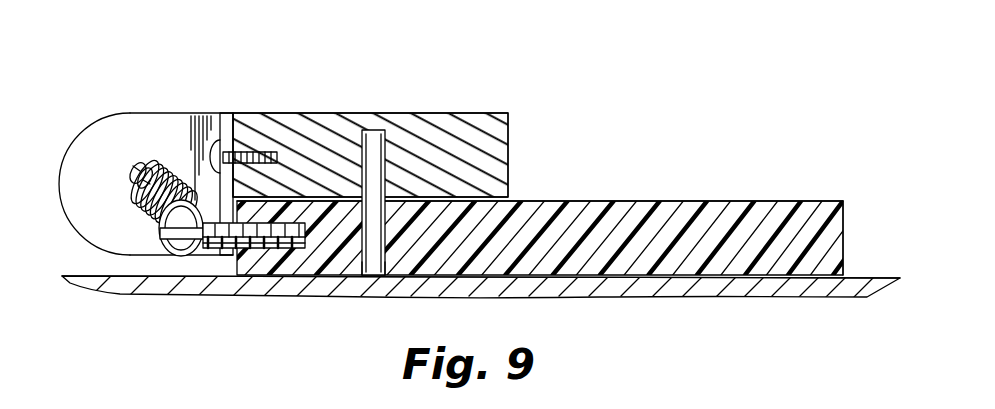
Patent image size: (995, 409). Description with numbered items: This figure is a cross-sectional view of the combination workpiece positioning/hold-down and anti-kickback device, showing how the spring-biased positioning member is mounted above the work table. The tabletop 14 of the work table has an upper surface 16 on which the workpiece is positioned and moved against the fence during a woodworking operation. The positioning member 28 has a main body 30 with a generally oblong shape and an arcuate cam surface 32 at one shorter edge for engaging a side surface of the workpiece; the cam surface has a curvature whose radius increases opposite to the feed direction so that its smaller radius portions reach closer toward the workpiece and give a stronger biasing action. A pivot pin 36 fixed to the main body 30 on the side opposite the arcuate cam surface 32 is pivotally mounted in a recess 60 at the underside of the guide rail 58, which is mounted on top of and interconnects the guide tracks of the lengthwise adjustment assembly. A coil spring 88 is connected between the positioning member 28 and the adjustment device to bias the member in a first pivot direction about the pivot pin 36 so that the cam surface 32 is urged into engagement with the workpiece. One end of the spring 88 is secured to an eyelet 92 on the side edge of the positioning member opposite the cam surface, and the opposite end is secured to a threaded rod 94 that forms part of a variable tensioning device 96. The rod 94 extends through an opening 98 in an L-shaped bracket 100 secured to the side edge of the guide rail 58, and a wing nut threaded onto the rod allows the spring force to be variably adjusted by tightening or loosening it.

The tabletop 14 is at (328, 297).
The upper surface 16 is at (867, 279).
The positioning member 28 is at (672, 198).
The main body 30 is at (593, 200).
The arcuate cam surface 32 is at (846, 236).
The pivot pin 36 is at (377, 262).
The guide rail 58 is at (463, 113).
The recess 60 is at (374, 128).
The coil spring 88 is at (160, 212).
The eyelet 92 is at (201, 256).
The threaded rod 94 is at (151, 164).
The variable tensioning device 96 is at (163, 88).
The opening 98 is at (157, 165).
The L-shaped bracket 100 is at (110, 118).